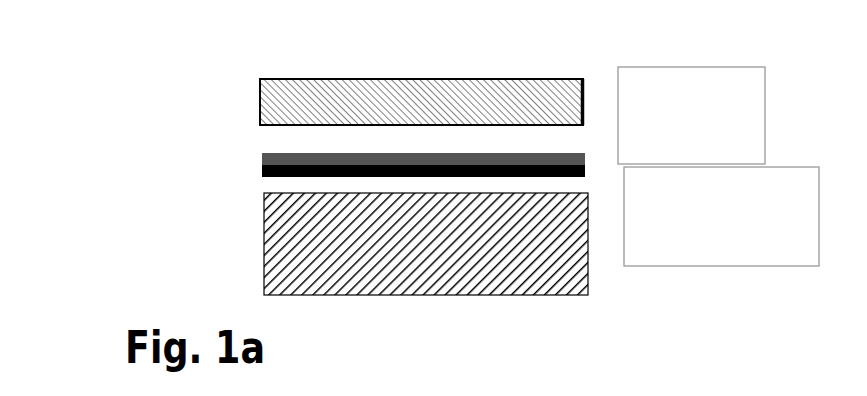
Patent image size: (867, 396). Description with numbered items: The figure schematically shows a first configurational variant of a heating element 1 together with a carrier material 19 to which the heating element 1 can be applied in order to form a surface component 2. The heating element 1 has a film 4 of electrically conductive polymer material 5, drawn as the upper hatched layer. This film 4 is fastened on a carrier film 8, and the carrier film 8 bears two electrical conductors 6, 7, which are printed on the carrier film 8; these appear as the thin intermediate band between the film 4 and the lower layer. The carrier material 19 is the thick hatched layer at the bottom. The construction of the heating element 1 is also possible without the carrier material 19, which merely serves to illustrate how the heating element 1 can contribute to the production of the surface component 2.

The heating element 1 is at (213, 46).
The surface component 2 is at (150, 152).
The film 4 is at (498, 99).
The electrically conductive polymer material 5 is at (583, 81).
The electrical conductor 6 is at (469, 133).
The electrical conductor 7 is at (593, 146).
The carrier film 8 is at (597, 183).
The carrier material 19 is at (584, 295).